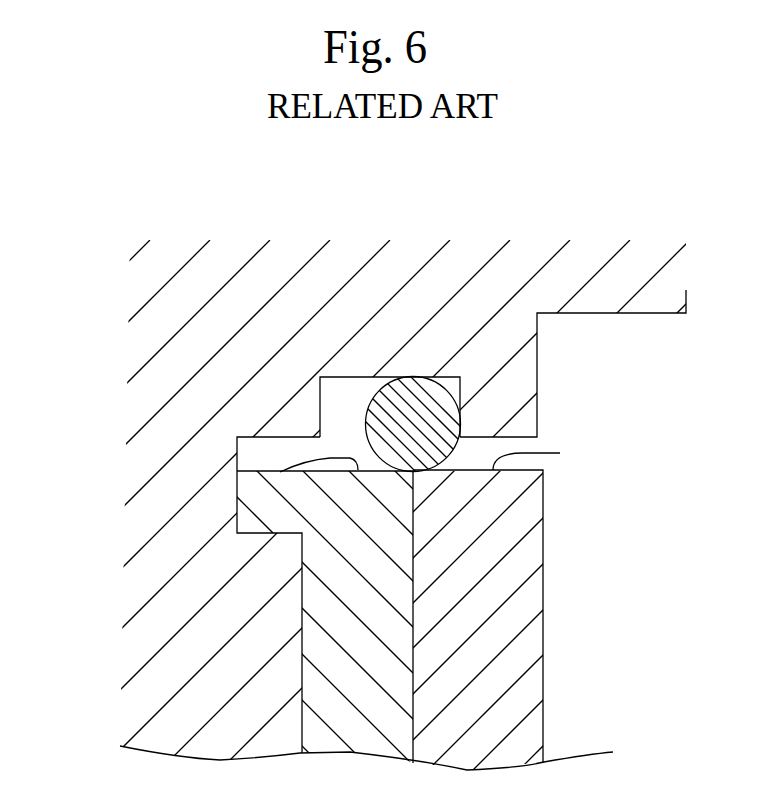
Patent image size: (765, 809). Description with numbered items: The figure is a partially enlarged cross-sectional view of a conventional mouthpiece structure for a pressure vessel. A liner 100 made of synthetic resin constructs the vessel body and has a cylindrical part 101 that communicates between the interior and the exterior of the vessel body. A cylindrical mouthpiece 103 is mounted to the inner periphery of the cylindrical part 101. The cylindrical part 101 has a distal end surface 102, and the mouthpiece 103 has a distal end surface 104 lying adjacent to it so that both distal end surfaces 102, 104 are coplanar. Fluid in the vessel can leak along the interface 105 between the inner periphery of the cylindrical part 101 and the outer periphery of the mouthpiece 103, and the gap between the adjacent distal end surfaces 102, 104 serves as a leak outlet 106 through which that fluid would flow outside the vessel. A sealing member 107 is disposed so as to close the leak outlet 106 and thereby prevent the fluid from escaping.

The liner 100 is at (578, 712).
The cylindrical part 101 is at (517, 625).
The distal end surface 102 is at (560, 453).
The mouthpiece 103 is at (345, 600).
The distal end surface 104 is at (282, 468).
The interface 105 is at (415, 552).
The leak outlet 106 is at (417, 460).
The sealing member 107 is at (389, 424).